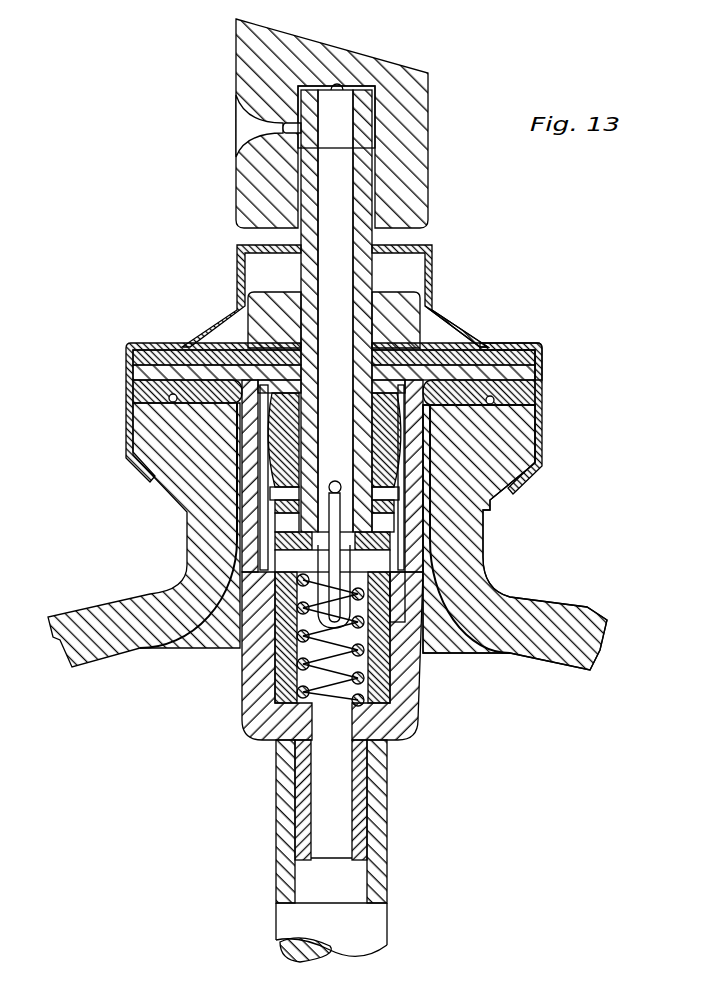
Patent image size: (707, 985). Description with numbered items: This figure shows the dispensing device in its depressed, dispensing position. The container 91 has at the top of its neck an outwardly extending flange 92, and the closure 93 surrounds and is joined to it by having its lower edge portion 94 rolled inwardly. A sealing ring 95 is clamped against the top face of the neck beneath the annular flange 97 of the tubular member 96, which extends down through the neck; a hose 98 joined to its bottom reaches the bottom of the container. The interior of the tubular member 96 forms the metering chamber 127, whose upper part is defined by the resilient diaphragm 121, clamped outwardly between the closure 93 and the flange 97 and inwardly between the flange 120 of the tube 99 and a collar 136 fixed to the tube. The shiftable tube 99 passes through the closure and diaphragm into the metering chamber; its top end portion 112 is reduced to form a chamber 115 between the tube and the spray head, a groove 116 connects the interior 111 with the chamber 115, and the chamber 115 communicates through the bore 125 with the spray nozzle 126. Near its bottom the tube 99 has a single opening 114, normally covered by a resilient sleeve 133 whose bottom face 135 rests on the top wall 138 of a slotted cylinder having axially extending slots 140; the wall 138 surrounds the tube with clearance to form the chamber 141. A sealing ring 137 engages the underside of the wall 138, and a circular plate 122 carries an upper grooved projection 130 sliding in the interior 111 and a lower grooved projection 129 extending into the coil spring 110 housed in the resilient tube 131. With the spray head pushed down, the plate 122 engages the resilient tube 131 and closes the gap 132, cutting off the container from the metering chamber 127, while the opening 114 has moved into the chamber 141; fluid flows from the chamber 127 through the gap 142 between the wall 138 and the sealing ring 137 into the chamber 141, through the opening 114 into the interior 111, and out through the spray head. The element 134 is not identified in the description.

The container 91 is at (562, 637).
The flange 92 is at (467, 505).
The closure 93 is at (543, 392).
The lower edge portion 94 is at (527, 482).
The sealing ring 95 is at (527, 402).
The tubular member 96 is at (420, 693).
The annular flange 97 is at (543, 370).
The hose 98 is at (290, 807).
The tube 99 is at (372, 237).
The coil spring 110 is at (387, 747).
The interior 111 is at (343, 192).
The top end portion 112 is at (363, 110).
The opening 114 is at (342, 481).
The chamber 115 is at (376, 132).
The groove 116 is at (343, 88).
The flange 120 is at (480, 347).
The resilient diaphragm 121 is at (455, 362).
The circular plate 122 is at (283, 562).
The bore 125 is at (287, 127).
The spray nozzle 126 is at (247, 118).
The metering chamber 127 is at (227, 417).
The longitudinally grooved projection 129 is at (397, 647).
The longitudinally grooved projection 130 is at (283, 558).
The resilient tube 131 is at (262, 703).
The gap 132 is at (257, 637).
The resilient sleeve 133 is at (280, 444).
The ring 134 is at (140, 368).
The bottom face 135 is at (270, 483).
The collar 136 is at (400, 300).
The sealing ring 137 is at (400, 542).
The top wall 138 is at (273, 498).
The slots 140 is at (397, 608).
The chamber 141 is at (400, 507).
The gap 142 is at (283, 528).